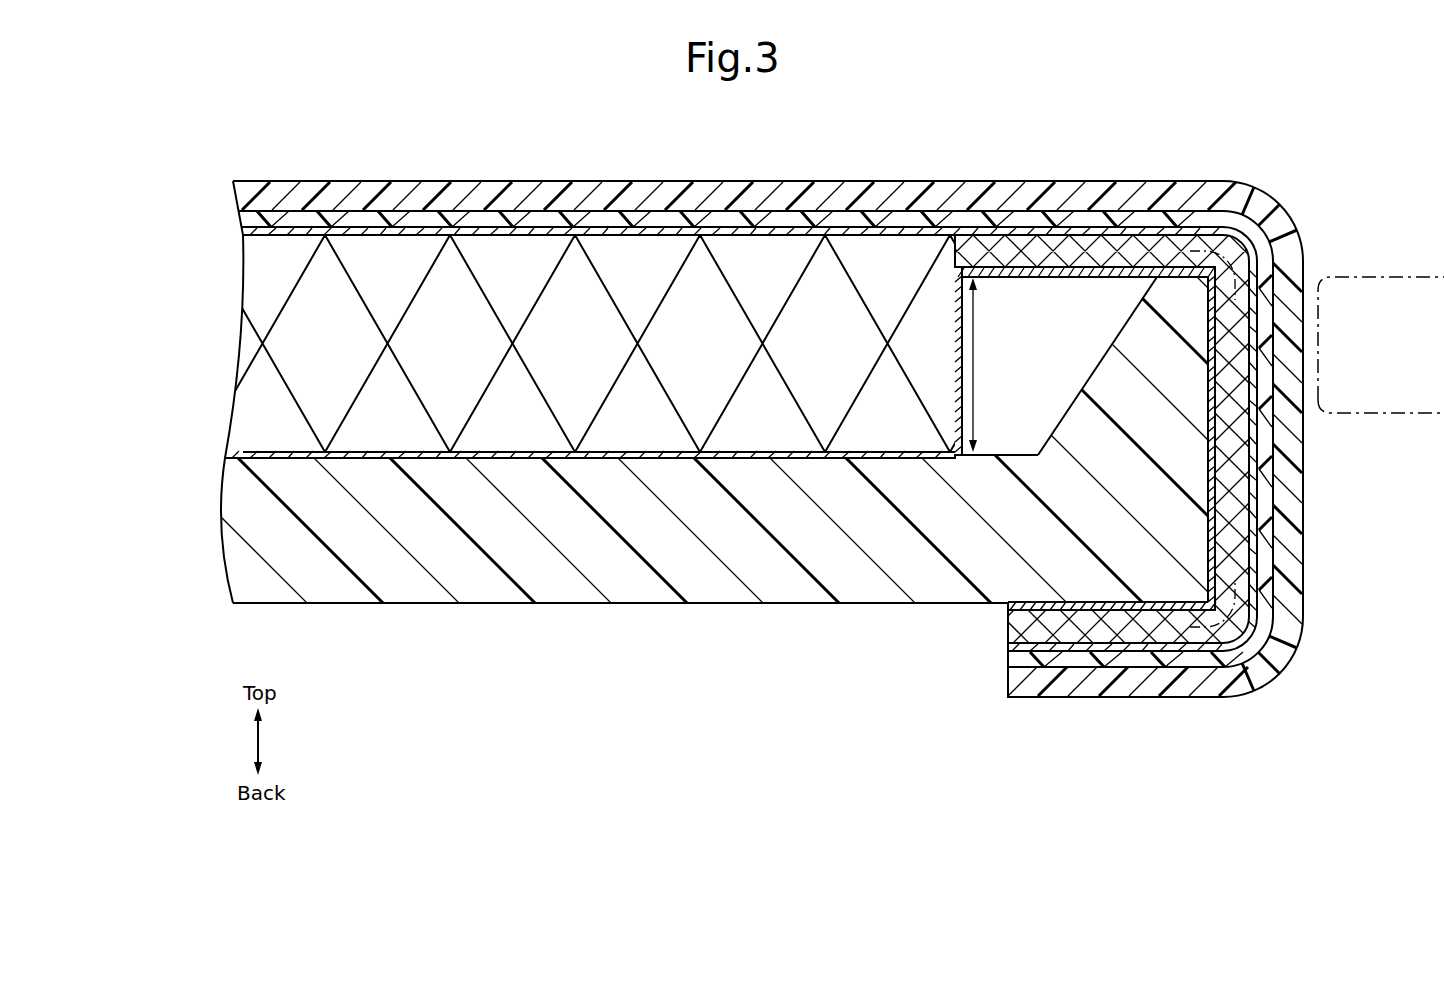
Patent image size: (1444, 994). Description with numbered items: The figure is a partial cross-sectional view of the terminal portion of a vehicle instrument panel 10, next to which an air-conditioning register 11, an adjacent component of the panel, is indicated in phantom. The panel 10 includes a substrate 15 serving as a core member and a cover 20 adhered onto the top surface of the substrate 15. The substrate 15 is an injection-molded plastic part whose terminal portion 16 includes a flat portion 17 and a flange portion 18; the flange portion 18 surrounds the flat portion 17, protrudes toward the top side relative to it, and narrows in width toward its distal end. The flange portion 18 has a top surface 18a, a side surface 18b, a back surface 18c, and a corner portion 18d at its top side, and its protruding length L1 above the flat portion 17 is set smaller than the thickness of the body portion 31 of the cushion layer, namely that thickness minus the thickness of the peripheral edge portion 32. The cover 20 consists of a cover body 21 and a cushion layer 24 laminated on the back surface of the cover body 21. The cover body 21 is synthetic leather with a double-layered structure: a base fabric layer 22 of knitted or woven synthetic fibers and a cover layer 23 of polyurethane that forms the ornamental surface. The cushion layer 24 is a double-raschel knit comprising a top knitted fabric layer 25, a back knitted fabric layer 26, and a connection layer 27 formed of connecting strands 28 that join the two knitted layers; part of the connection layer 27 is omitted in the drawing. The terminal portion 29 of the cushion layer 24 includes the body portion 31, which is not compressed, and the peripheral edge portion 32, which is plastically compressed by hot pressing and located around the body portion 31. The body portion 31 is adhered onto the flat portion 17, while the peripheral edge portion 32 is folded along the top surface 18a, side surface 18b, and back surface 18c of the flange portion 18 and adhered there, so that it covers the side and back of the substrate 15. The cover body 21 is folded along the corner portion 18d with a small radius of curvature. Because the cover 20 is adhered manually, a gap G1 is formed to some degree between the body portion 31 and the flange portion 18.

The panel 10 is at (1254, 181).
The air-conditioning register 11 is at (1397, 275).
The substrate 15 is at (652, 607).
The terminal portion 16 is at (1043, 350).
The flat portion 17 is at (1013, 463).
The flange portion 18 is at (1113, 367).
The top surface 18a is at (1147, 278).
The side surface 18b is at (1220, 380).
The back surface 18c is at (1125, 608).
The corner portion 18d is at (1280, 212).
The cover 20 is at (287, 175).
The cover body 21 is at (174, 176).
The base fabric layer 22 is at (243, 226).
The cover layer 23 is at (243, 199).
The cushion layer 24 is at (174, 282).
The top knitted fabric layer 25 is at (268, 237).
The back knitted fabric layer 26 is at (268, 450).
The connection layer 27 is at (286, 333).
The connecting strands 28 is at (479, 398).
The terminal portion 29 is at (997, 487).
The body portion 31 is at (915, 462).
The peripheral edge portion 32 is at (1027, 600).
The gap G1 is at (1057, 318).
The protruding length L1 is at (962, 339).